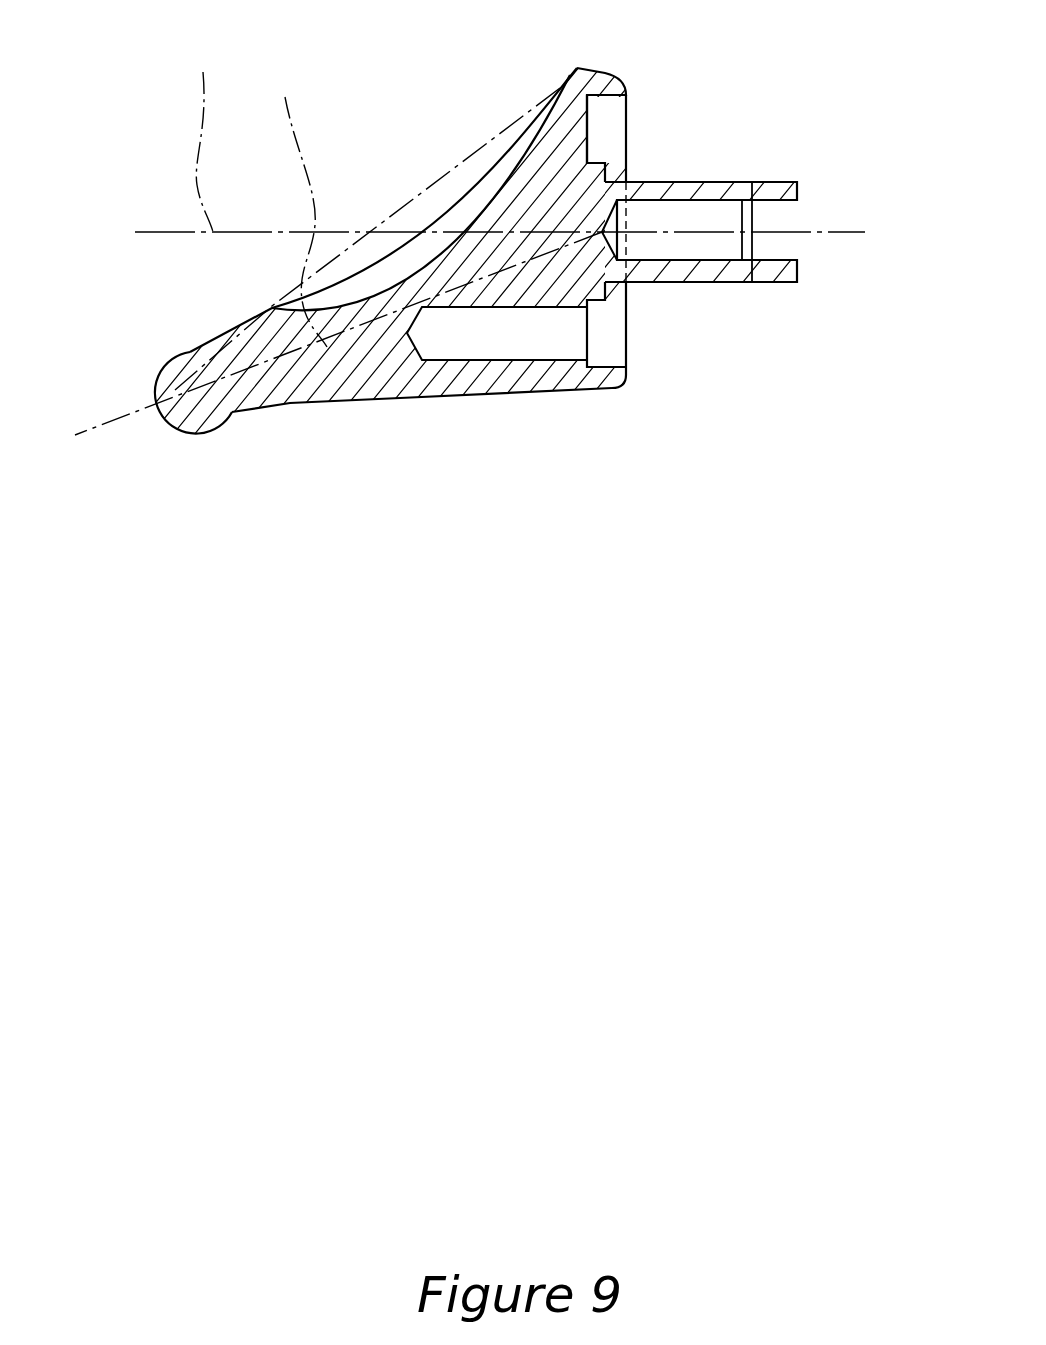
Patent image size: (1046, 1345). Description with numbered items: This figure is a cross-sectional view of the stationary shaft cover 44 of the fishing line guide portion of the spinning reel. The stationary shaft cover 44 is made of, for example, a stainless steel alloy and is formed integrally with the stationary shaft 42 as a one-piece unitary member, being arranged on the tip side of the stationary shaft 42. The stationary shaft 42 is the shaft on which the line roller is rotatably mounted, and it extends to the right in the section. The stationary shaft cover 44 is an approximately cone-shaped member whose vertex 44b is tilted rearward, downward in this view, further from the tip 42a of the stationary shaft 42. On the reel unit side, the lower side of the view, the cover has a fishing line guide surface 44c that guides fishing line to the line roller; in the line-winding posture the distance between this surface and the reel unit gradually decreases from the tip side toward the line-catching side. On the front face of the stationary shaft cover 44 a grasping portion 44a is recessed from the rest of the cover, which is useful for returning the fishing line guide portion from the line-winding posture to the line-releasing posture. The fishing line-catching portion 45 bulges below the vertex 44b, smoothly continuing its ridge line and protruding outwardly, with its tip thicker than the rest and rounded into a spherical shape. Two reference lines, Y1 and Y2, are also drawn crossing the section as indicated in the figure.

The stationary shaft 42 is at (695, 182).
The tip of the stationary shaft 42a is at (603, 165).
The stationary shaft cover 44 is at (412, 213).
The grasping portion 44a is at (513, 188).
The vertex 44b is at (150, 408).
The fishing line guide surface 44c is at (440, 398).
The fishing line-catching portion 45 is at (177, 397).
The reference line Y1 is at (198, 124).
The reference line Y2 is at (290, 195).